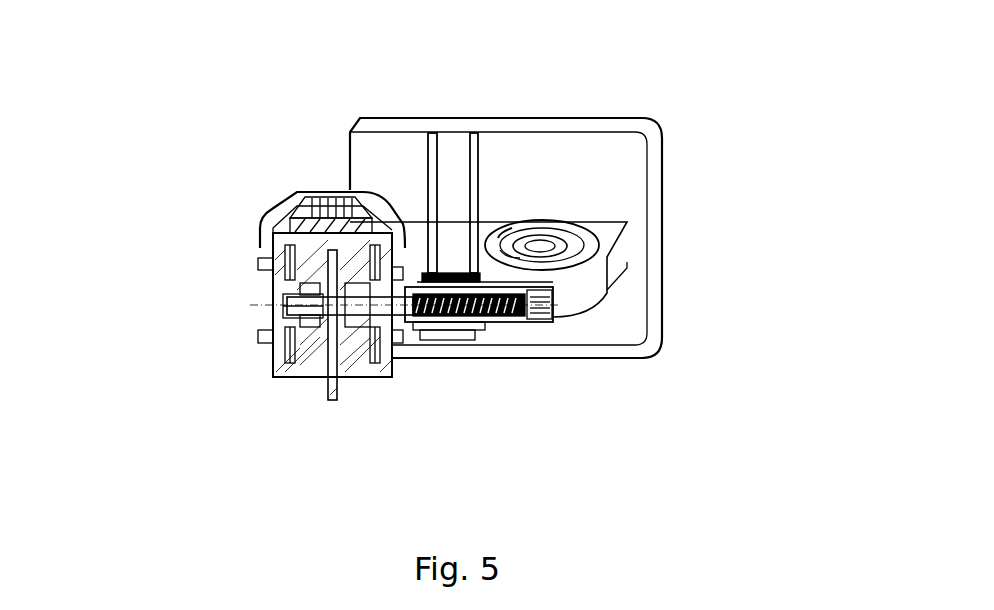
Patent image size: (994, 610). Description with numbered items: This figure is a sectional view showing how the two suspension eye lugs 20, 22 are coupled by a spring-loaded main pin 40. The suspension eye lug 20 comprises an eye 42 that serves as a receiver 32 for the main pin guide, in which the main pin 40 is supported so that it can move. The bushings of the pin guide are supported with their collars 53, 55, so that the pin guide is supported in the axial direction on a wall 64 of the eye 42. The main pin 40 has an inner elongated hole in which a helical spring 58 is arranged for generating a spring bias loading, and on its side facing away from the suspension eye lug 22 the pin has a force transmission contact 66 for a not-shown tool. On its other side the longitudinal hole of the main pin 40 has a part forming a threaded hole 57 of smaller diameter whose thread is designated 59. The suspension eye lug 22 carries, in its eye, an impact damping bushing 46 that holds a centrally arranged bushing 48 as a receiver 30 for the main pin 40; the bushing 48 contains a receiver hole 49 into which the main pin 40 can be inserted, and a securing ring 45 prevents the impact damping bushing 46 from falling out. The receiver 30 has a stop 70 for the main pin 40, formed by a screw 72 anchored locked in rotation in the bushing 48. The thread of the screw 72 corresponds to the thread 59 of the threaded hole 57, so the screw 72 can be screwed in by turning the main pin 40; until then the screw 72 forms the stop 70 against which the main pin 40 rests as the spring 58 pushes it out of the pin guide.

The suspension eye lug 20 is at (627, 323).
The suspension eye lug 22 is at (263, 240).
The receiver 30 is at (377, 387).
The receiver 32 is at (505, 336).
The main pin 40 is at (412, 262).
The eye 42 is at (452, 335).
The securing ring 45 is at (345, 197).
The impact damping bushing 46 is at (357, 357).
The bushing 48 is at (303, 197).
The receiver hole 49 is at (322, 197).
The collar 53 is at (425, 320).
The collar 55 is at (472, 330).
The threaded hole 57 is at (365, 377).
The helical spring 58 is at (512, 318).
The thread 59 is at (400, 345).
The wall 64 is at (447, 268).
The force transmission contact 66 is at (553, 313).
The stop 70 is at (288, 362).
The screw 72 is at (288, 197).